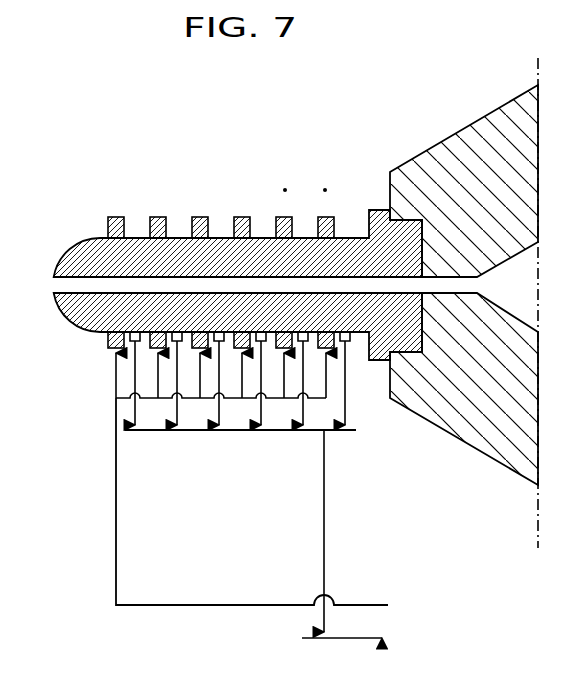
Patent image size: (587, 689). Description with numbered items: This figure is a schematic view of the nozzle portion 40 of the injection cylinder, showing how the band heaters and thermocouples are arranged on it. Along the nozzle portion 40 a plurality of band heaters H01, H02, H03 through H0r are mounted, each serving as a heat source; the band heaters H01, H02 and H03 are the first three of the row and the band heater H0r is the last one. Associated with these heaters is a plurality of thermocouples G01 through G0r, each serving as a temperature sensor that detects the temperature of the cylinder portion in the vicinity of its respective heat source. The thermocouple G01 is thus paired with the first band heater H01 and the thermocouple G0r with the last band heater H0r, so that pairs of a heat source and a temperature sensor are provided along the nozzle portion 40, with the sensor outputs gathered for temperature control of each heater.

The nozzle portion 40 is at (74, 240).
The band heater H01 is at (120, 216).
The band heater H02 is at (162, 216).
The band heater H03 is at (204, 216).
The band heater H0r is at (328, 216).
The thermocouple G01 is at (108, 349).
The thermocouple G0r is at (353, 346).